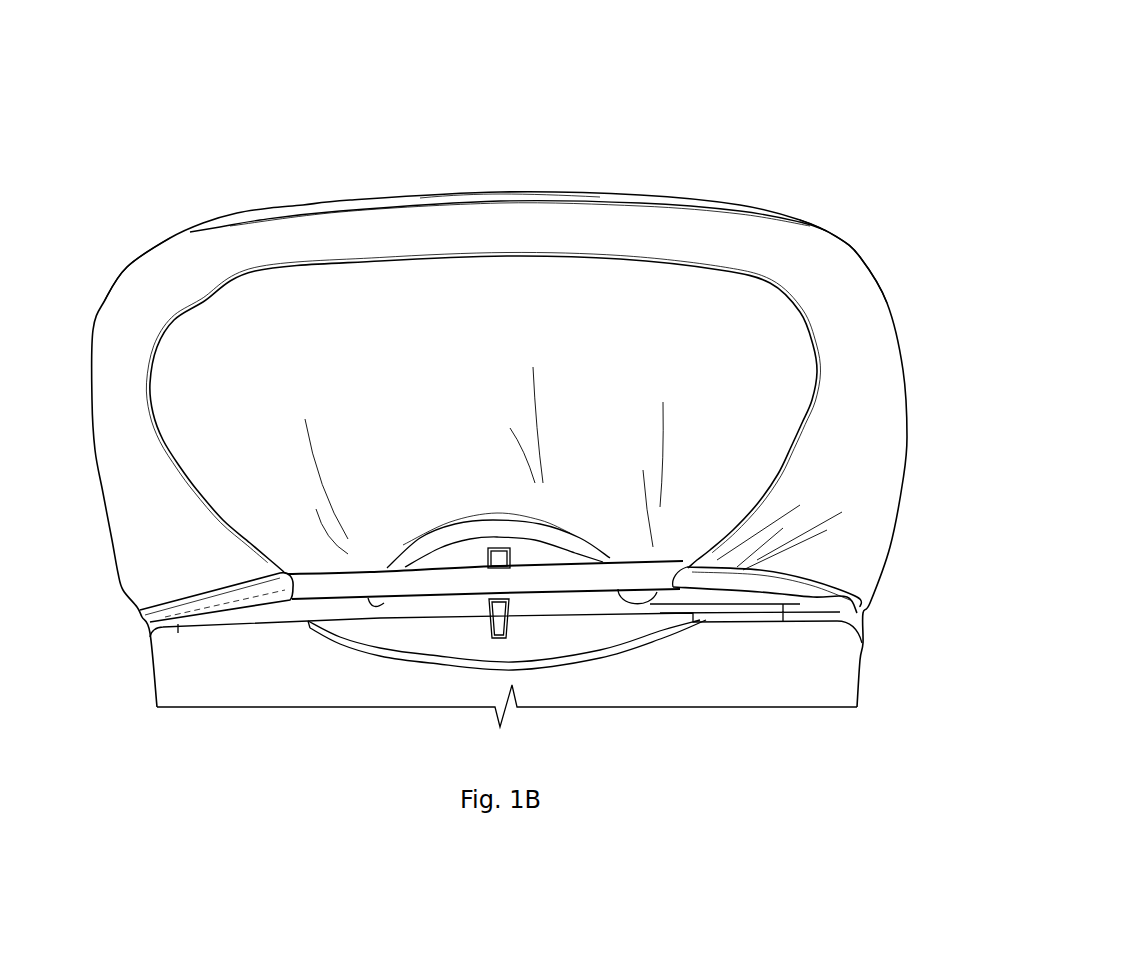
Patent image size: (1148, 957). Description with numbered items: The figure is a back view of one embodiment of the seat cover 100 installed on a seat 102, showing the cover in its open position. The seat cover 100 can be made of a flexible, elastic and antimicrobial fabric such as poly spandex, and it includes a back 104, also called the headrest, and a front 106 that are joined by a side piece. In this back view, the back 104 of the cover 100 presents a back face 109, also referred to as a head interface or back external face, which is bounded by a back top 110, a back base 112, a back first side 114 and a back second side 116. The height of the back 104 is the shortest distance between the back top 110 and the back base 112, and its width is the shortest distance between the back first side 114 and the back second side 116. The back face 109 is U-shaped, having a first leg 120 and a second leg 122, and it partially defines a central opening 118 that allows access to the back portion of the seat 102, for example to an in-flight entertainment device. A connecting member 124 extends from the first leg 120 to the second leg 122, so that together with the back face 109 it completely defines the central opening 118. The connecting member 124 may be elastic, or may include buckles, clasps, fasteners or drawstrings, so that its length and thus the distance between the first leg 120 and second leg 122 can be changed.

The seat cover 100 is at (822, 60).
The seat 102 is at (862, 680).
The back 104 is at (140, 578).
The front 106 is at (343, 200).
The back face 109 is at (549, 228).
The back top 110 is at (640, 198).
The back base 112 is at (655, 594).
The back first side 114 is at (125, 270).
The back second side 116 is at (875, 268).
The central opening 118 is at (356, 346).
The first leg 120 is at (218, 597).
The second leg 122 is at (778, 600).
The connecting member 124 is at (415, 585).